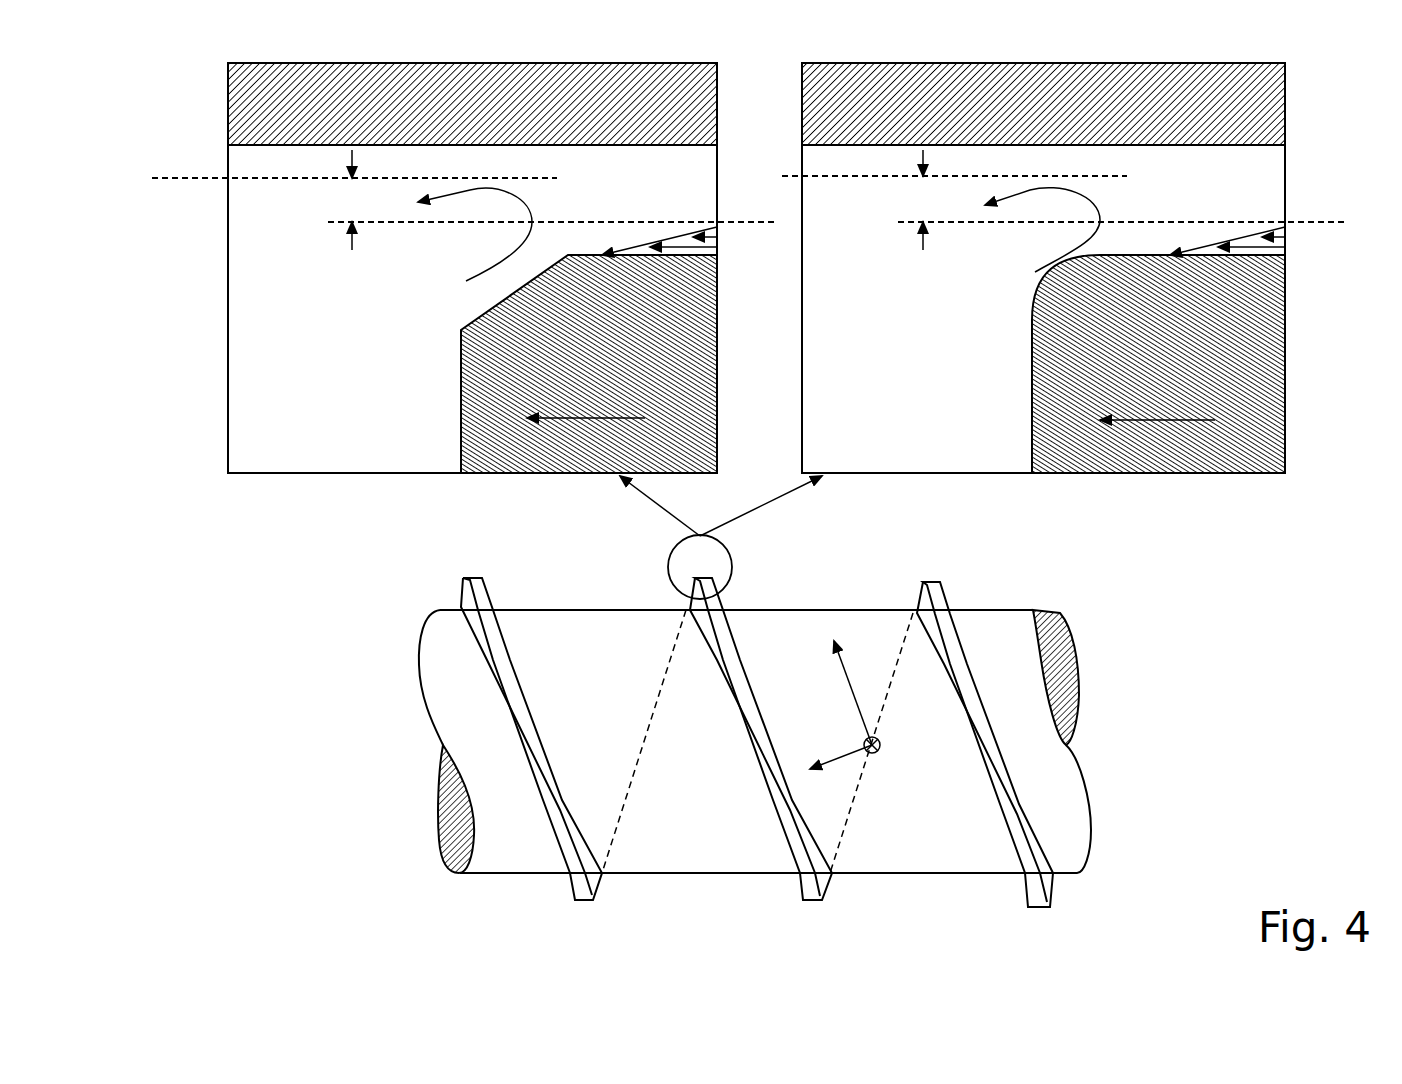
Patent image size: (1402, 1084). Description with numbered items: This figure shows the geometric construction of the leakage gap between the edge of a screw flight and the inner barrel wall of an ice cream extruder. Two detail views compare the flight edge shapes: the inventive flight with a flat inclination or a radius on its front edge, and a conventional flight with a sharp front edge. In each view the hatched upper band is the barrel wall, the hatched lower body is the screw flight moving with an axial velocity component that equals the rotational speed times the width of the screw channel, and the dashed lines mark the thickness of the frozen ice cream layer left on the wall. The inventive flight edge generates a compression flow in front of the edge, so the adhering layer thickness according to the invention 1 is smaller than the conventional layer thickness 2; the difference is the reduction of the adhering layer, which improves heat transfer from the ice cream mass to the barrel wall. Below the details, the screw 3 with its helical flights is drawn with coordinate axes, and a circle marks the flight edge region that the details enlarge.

The layer thickness S1 according to the invention 1 is at (462, 265).
The conventional layer thickness S2 2 is at (1031, 268).
The extruder screw with helical flights (unnumbered in drawing) 3 is at (755, 721).